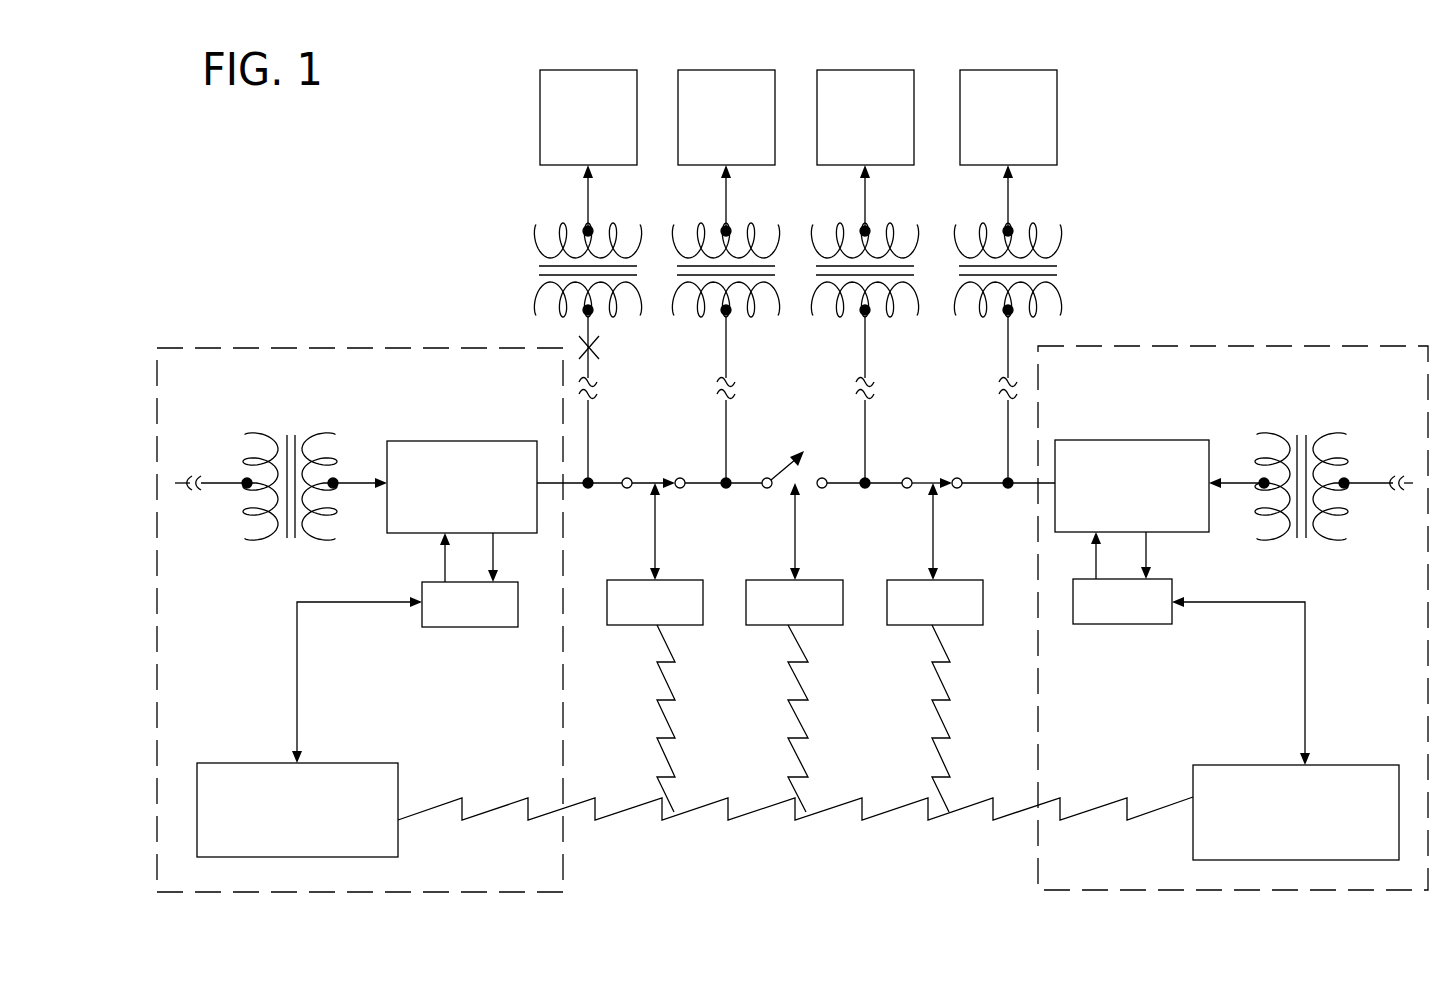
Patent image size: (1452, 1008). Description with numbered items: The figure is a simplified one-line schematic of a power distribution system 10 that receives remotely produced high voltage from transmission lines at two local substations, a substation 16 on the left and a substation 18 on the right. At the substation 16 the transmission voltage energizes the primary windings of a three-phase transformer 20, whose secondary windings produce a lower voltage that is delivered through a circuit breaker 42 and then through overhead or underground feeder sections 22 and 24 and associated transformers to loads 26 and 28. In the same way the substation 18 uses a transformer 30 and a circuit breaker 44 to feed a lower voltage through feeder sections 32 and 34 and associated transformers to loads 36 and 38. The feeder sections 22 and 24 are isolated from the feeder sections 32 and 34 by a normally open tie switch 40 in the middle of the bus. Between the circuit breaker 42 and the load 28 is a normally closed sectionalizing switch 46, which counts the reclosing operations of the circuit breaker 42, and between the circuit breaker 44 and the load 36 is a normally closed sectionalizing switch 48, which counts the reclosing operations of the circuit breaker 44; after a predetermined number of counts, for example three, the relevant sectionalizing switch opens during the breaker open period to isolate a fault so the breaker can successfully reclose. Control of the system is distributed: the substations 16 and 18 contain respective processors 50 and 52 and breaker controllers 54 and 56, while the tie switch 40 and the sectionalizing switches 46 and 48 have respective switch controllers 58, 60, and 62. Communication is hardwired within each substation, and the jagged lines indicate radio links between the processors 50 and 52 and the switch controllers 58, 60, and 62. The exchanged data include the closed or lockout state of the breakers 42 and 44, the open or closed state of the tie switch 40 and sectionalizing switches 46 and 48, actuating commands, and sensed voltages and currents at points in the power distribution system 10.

The power distribution system 10 is at (332, 215).
The substation 16 is at (308, 345).
The substation 18 is at (1220, 343).
The three-phase transformer 20 is at (287, 436).
The feeder section 22 is at (590, 486).
The feeder section 24 is at (728, 486).
The load 26 is at (573, 69).
The load 28 is at (715, 69).
The transformer 30 is at (1303, 435).
The feeder section 32 is at (868, 486).
The feeder section 34 is at (1008, 486).
The load 36 is at (853, 69).
The load 38 is at (997, 69).
The normally open tie switch 40 is at (779, 470).
The circuit breaker 42 is at (457, 441).
The circuit breaker 44 is at (1115, 440).
The normally closed sectionalizing switch 46 is at (660, 481).
The normally closed sectionalizing switch 48 is at (924, 481).
The processor 50 is at (253, 762).
The processor 52 is at (1247, 764).
The breaker controller 54 is at (481, 628).
The breaker controller 56 is at (1130, 624).
The switch controller 58 is at (770, 626).
The switch controller 60 is at (632, 626).
The switch controller 62 is at (905, 626).